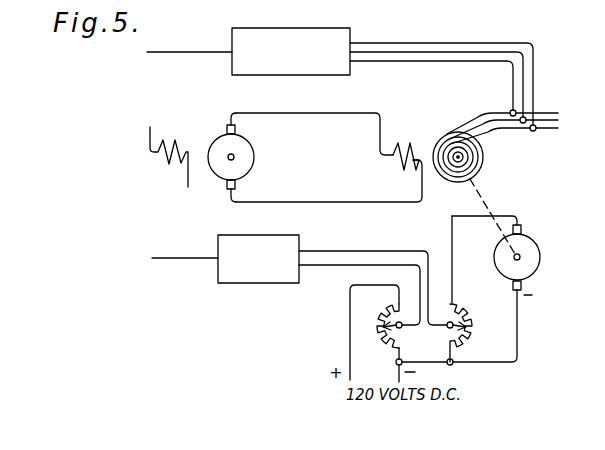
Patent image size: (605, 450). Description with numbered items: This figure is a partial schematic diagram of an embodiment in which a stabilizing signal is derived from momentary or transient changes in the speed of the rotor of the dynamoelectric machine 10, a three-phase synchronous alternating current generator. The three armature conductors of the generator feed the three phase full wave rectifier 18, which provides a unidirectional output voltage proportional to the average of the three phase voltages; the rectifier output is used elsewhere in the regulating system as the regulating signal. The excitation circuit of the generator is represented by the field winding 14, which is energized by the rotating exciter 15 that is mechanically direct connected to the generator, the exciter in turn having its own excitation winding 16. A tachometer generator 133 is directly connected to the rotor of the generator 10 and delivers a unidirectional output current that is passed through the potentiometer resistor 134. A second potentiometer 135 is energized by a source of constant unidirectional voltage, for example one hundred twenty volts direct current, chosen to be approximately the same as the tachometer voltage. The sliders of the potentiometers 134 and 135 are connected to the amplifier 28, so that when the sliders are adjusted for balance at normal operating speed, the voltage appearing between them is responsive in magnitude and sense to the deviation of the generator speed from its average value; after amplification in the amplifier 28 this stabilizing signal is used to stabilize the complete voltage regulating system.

The three phase full wave rectifier 18 is at (305, 28).
The dynamoelectric machine 10 is at (484, 156).
The excitation winding 16 is at (168, 150).
The rotating exciter 15 is at (254, 141).
The field winding 14 is at (399, 145).
The amplifier 28 is at (258, 283).
The tachometer generator 133 is at (540, 250).
The potentiometer resistor 134 is at (475, 306).
The second potentiometer 135 is at (378, 345).